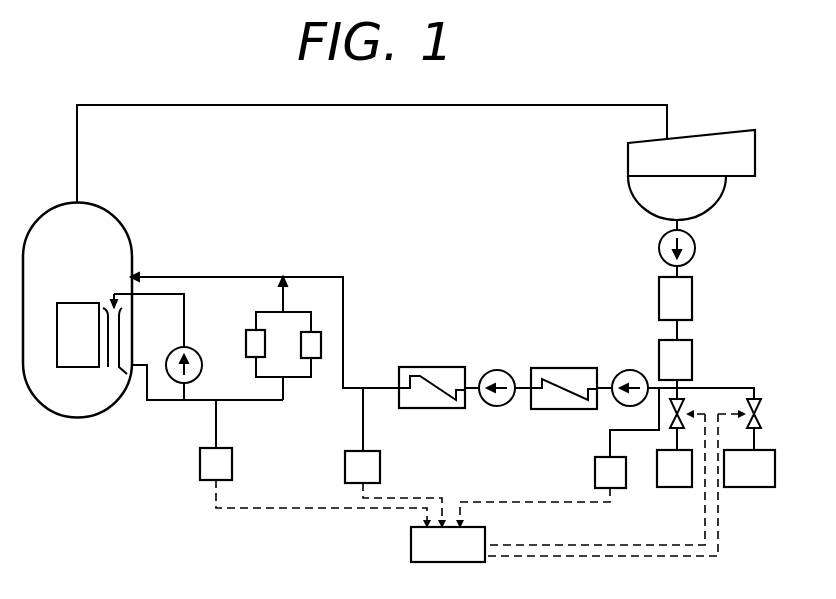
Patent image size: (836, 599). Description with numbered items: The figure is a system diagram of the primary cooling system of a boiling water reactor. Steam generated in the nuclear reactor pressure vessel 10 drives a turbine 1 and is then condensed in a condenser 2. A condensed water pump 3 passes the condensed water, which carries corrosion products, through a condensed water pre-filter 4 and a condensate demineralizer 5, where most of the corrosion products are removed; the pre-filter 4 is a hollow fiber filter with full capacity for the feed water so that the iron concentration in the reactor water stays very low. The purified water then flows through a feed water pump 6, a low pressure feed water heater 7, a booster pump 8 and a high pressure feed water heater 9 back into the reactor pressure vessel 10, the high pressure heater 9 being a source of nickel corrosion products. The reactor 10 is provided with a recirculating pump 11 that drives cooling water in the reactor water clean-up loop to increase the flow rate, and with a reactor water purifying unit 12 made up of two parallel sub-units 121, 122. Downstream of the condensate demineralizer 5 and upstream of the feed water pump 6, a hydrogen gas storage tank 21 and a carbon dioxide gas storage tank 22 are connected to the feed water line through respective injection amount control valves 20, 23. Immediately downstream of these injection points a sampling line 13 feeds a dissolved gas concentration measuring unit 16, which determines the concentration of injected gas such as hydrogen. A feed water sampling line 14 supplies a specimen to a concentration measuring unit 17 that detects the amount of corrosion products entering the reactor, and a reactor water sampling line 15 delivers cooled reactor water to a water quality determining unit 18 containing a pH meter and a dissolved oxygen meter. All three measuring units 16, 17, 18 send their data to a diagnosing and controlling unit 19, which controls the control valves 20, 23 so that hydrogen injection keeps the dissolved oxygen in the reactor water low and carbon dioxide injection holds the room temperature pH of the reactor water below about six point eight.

The turbine 1 is at (628, 160).
The condenser 2 is at (630, 193).
The condensed water pump 3 is at (659, 245).
The condensed water pre-filter 4 is at (692, 290).
The condensate demineralizer 5 is at (693, 350).
The feed water pump 6 is at (630, 368).
The low pressure feed water heater 7 is at (557, 367).
The booster pump 8 is at (493, 369).
The high pressure feed water heater 9 is at (427, 366).
The nuclear reactor pressure vessel 10 is at (118, 222).
The recirculating pump 11 is at (200, 348).
The reactor water purifying unit 12 is at (273, 349).
The sub-unit 121 is at (245, 343).
The sub-unit 122 is at (312, 348).
The sampling line 13 is at (608, 443).
The feed water sampling line 14 is at (362, 432).
The reactor water sampling line 15 is at (215, 432).
The dissolved gas concentration measuring unit 16 is at (594, 475).
The concentration measuring unit 17 is at (344, 470).
The water quality determining unit 18 is at (201, 463).
The diagnosing and controlling unit 19 is at (411, 547).
The injection amount control valve 20 is at (671, 426).
The hydrogen gas storage tank 21 is at (665, 488).
The carbon dioxide gas storage tank 22 is at (763, 488).
The injection amount control valve 23 is at (757, 393).